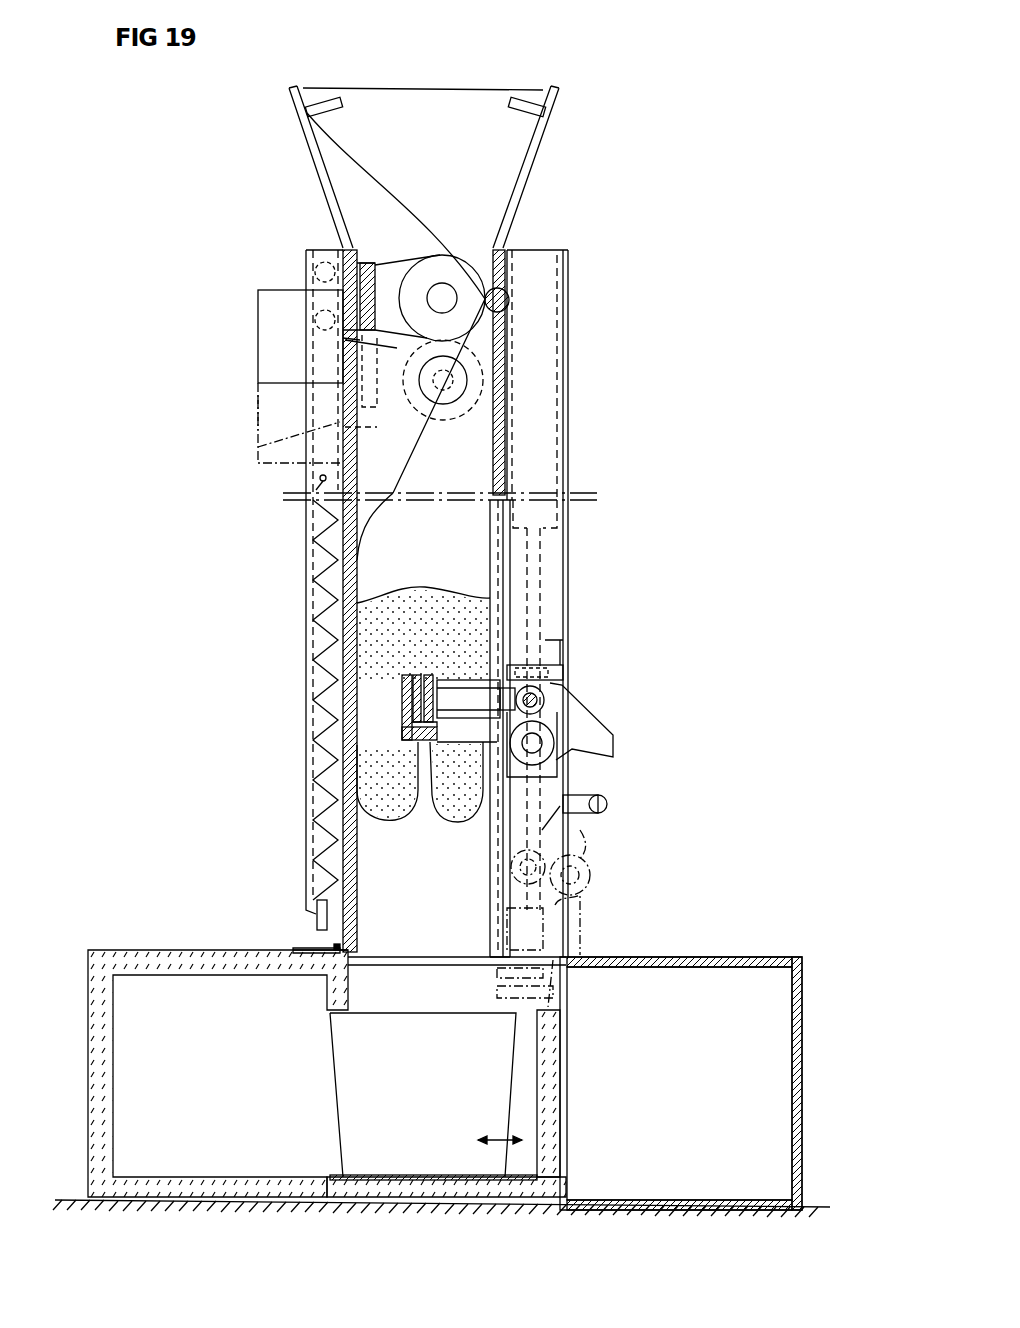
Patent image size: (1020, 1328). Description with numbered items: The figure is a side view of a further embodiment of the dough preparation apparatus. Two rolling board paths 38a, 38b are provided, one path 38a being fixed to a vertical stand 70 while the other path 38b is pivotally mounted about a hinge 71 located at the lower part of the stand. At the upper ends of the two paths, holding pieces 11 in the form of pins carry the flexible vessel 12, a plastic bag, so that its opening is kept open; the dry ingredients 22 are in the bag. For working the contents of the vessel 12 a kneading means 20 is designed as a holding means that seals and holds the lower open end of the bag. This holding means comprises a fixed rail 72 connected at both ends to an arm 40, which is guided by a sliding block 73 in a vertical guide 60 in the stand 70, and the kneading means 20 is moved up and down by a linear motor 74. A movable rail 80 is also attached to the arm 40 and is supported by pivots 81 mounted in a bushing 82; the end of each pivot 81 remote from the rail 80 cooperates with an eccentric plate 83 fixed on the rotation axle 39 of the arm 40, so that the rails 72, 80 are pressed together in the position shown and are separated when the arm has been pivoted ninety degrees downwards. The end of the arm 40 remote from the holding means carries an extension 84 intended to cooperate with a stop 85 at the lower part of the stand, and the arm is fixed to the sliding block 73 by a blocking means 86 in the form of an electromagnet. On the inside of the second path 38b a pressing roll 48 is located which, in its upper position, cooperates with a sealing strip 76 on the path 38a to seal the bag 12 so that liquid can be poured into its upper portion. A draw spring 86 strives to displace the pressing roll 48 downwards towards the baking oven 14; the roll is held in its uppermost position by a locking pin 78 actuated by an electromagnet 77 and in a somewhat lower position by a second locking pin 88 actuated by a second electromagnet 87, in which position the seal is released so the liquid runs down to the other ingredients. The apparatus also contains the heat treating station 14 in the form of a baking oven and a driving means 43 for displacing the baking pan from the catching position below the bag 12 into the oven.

The holding pieces 11 is at (331, 100).
The flexible vessel 12 is at (422, 97).
The baking oven 14 is at (148, 951).
The kneading means 20 is at (399, 731).
The dry ingredients 22 is at (438, 1075).
The rolling board path 38a is at (497, 445).
The rolling board path 38b is at (362, 525).
The rotation axle 39 is at (543, 703).
The arm 40 is at (475, 730).
The driving means 43 is at (693, 1095).
The pressing roll 48 is at (422, 258).
The vertical guide 60 is at (540, 272).
The vertical stand 70 is at (568, 373).
The hinge 71 is at (333, 946).
The fixed rail 72 is at (405, 710).
The sliding block 73 is at (562, 663).
The linear motor 74 is at (537, 563).
The sealing strip 76 is at (509, 300).
The electromagnet 77 is at (275, 311).
The locking pin 78 is at (343, 338).
The movable rail 80 is at (421, 677).
The pivots 81 is at (433, 677).
The bushing 82 is at (472, 693).
The eccentric plate 83 is at (527, 677).
The extension 84 is at (608, 749).
The stop 85 is at (606, 807).
The blocking means / draw spring 86 is at (318, 656).
The second electromagnet 87 is at (275, 400).
The second locking pin 88 is at (258, 447).